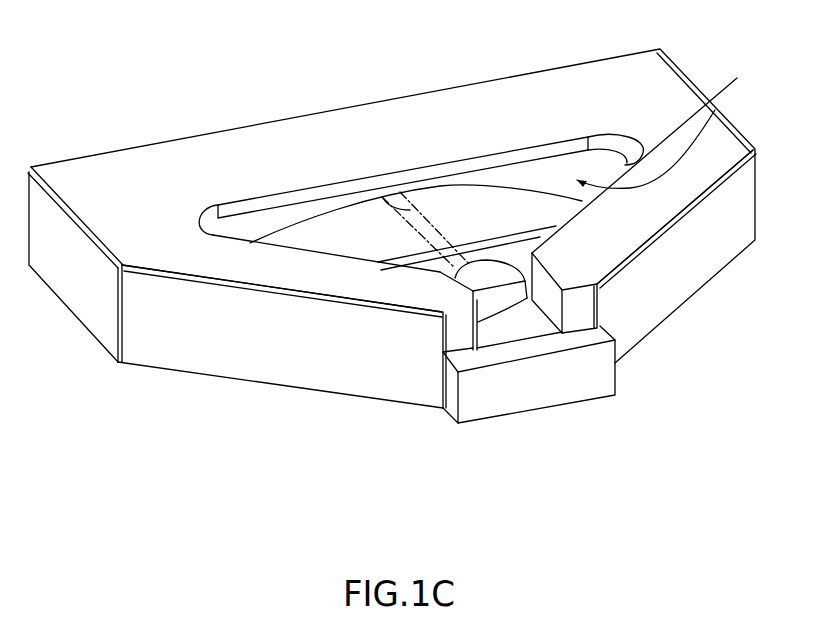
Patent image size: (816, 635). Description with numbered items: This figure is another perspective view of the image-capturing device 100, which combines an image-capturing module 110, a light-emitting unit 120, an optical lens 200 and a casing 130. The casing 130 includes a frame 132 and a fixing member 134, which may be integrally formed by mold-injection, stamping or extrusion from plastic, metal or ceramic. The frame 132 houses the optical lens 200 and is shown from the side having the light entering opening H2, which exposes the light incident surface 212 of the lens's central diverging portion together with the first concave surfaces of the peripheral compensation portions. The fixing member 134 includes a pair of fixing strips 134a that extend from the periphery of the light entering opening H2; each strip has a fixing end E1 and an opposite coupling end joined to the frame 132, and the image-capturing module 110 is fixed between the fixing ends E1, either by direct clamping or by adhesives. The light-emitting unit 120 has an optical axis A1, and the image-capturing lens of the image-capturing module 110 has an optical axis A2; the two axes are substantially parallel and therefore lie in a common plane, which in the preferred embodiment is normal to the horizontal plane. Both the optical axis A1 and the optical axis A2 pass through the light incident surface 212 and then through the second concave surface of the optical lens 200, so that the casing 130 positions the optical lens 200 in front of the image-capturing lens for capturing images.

The image-capturing device 100 is at (102, 88).
The image-capturing module 110 is at (545, 377).
The light-emitting unit 120 is at (487, 280).
The casing 130 is at (149, 441).
The frame 132 is at (92, 297).
The fixing member 134 is at (182, 343).
The fixing strips 134a is at (292, 355).
The optical lens 200 is at (258, 227).
The light incident surface 212 is at (422, 194).
The optical axis of the light-emitting unit A1 is at (381, 192).
The optical axis of the image-capturing lens A2 is at (415, 198).
The fixing end E1 is at (430, 287).
The light entering opening H2 is at (645, 153).